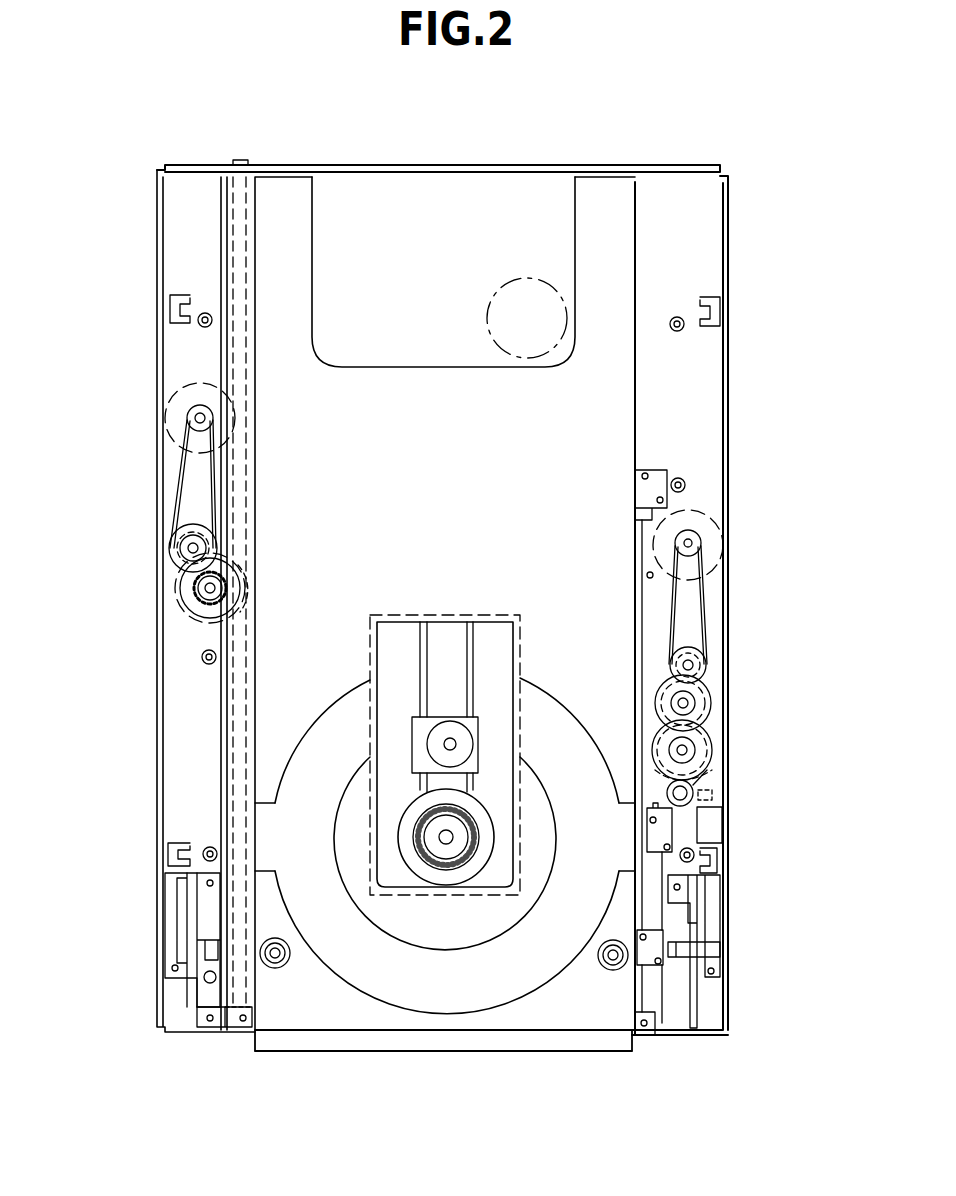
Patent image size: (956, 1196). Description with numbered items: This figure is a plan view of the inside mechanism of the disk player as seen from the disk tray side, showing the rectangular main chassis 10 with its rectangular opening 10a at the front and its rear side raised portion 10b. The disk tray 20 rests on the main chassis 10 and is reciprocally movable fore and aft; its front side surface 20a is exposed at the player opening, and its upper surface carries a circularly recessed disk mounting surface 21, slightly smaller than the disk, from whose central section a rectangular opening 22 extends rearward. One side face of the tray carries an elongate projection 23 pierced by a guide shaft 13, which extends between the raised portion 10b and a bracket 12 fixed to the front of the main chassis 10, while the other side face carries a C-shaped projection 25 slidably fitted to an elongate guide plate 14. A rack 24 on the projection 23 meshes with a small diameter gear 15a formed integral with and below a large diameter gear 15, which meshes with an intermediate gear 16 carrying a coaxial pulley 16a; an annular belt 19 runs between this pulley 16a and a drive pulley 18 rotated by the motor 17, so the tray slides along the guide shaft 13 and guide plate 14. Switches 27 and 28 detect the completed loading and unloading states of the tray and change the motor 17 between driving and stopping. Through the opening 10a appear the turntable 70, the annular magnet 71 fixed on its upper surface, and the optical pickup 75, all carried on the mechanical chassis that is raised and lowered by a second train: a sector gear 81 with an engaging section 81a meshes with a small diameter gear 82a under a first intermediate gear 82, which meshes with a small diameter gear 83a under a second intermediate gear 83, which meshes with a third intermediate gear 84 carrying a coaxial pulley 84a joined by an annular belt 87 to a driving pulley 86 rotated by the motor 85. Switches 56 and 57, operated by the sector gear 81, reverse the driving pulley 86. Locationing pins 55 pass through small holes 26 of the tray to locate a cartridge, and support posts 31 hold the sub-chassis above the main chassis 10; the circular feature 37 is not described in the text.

The main chassis 10 is at (741, 415).
The rectangular opening 10a is at (500, 626).
The rear side raised portion 10b is at (394, 178).
The bracket 12 is at (232, 1010).
The guide shaft 13 is at (237, 700).
The guide plate 14 is at (656, 900).
The large diameter gear 15 is at (205, 612).
The small diameter gear 15a is at (200, 592).
The intermediate gear 16 is at (185, 553).
The pulley 16a is at (178, 542).
The motor 17 is at (176, 398).
The drive pulley 18 is at (187, 418).
The annular belt 19 is at (180, 470).
The disk tray 20 is at (487, 1063).
The front side surface 20a is at (433, 1054).
The disk mounting surface 21 is at (406, 992).
The rectangular opening 22 is at (515, 648).
The elongate projection 23 is at (238, 225).
The rack 24 is at (215, 574).
The projection 25 is at (655, 520).
The small holes 26 is at (290, 958).
The switch 27 is at (660, 480).
The switch 28 is at (658, 948).
The support posts 31 is at (198, 322).
The hole 37 is at (528, 278).
The locationing pins 55 is at (275, 968).
The switch 56 is at (670, 835).
The switch 57 is at (718, 828).
The turntable 70 is at (494, 808).
The annular magnet 71 is at (468, 840).
The optical pickup 75 is at (478, 730).
The sector gear 81 is at (695, 795).
The engaging section 81a is at (712, 806).
The first intermediate gear 82 is at (710, 744).
The small diameter gear 82a is at (708, 768).
The second intermediate gear 83 is at (709, 692).
The small diameter gear 83a is at (700, 716).
The third intermediate gear 84 is at (704, 666).
The pulley 84a is at (692, 647).
The motor 85 is at (716, 572).
The driving pulley 86 is at (700, 543).
The annular belt 87 is at (704, 602).